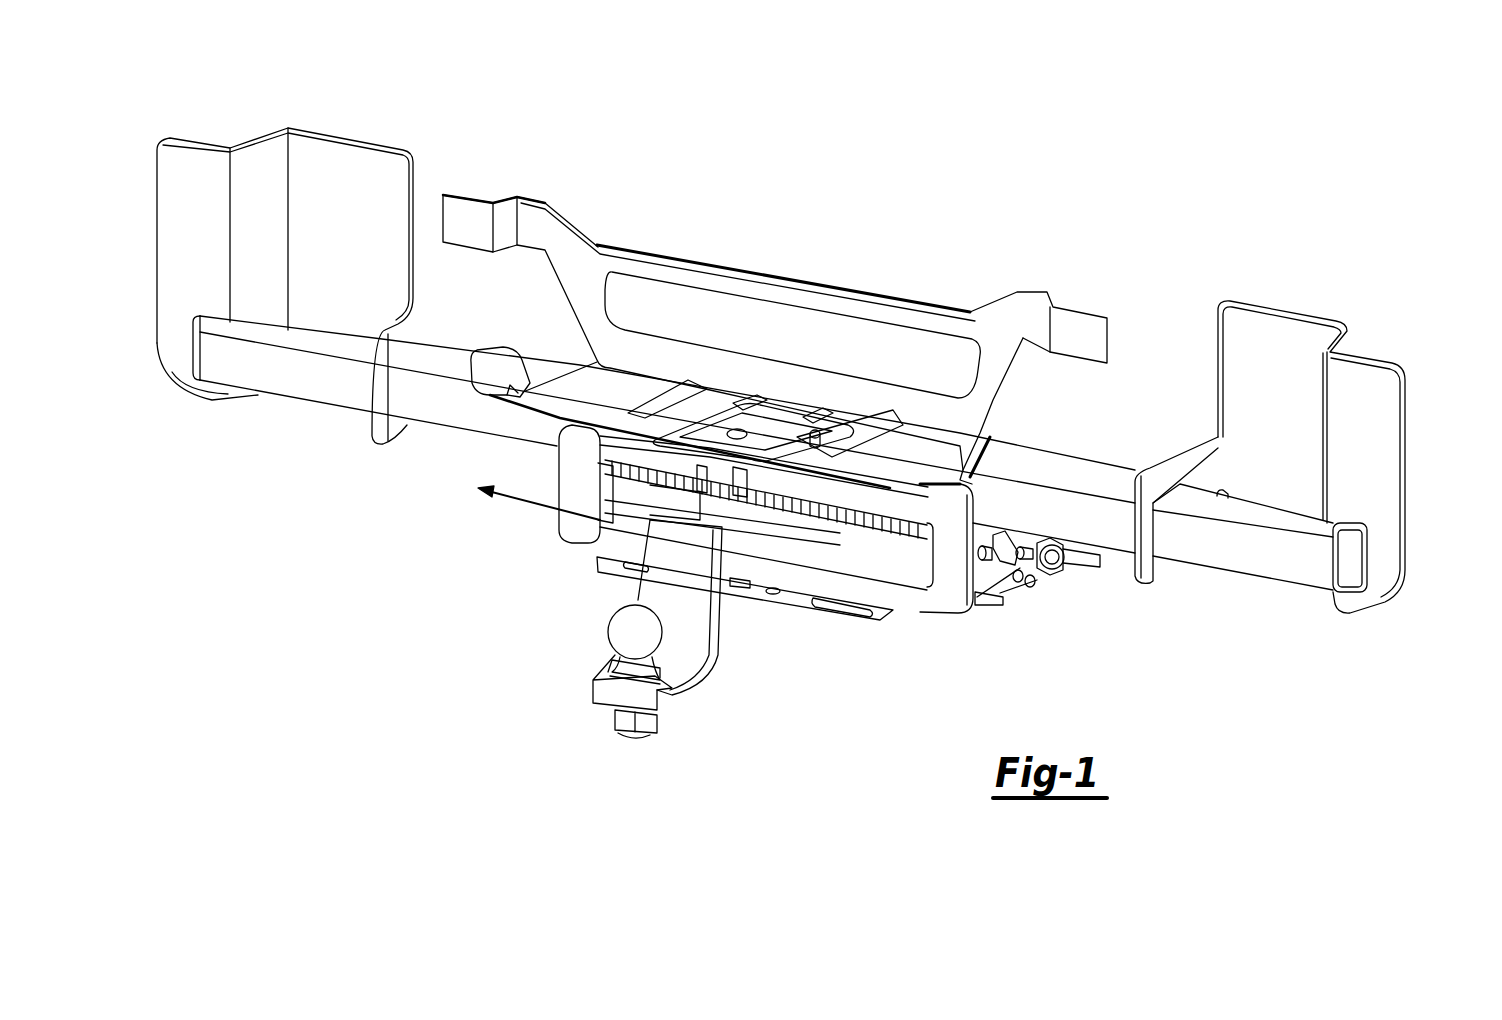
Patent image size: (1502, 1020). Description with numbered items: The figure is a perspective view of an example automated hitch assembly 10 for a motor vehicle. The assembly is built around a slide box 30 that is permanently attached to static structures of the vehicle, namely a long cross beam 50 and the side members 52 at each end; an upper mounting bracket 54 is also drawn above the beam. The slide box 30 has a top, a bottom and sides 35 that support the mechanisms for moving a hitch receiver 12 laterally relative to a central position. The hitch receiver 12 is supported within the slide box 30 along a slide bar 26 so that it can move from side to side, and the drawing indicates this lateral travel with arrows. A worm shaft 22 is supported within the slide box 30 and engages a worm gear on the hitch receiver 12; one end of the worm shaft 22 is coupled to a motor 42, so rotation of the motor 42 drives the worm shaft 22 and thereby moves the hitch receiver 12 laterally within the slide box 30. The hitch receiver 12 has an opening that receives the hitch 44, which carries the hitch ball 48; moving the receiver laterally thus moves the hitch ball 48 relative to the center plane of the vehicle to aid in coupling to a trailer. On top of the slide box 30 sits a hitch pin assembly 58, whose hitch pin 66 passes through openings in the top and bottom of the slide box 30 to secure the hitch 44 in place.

The automated hitch assembly 10 is at (1322, 277).
The hitch receiver 12 is at (963, 576).
The worm shaft 22 is at (617, 465).
The slide bar 26 is at (625, 487).
The slide box 30 is at (950, 593).
The sides 35 is at (978, 578).
The motor 42 is at (1040, 567).
The hitch 44 is at (673, 588).
The hitch ball 48 is at (623, 633).
The beam 50 is at (1077, 508).
The side members 52 is at (175, 212).
The upper mounting bracket 54 is at (613, 258).
The hitch pin assembly 58 is at (767, 427).
The hitch pin 66 is at (736, 594).